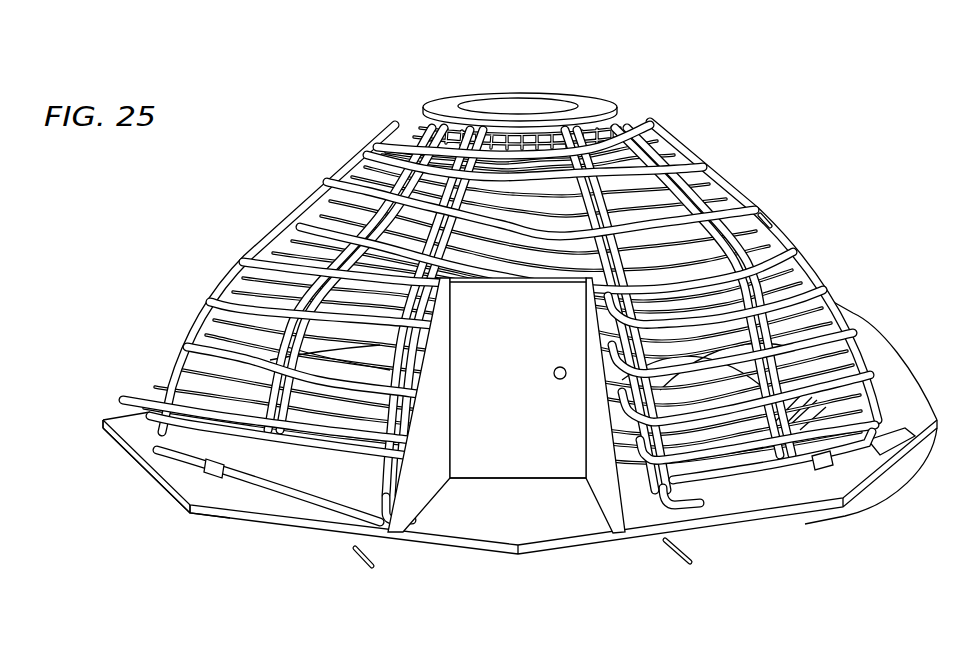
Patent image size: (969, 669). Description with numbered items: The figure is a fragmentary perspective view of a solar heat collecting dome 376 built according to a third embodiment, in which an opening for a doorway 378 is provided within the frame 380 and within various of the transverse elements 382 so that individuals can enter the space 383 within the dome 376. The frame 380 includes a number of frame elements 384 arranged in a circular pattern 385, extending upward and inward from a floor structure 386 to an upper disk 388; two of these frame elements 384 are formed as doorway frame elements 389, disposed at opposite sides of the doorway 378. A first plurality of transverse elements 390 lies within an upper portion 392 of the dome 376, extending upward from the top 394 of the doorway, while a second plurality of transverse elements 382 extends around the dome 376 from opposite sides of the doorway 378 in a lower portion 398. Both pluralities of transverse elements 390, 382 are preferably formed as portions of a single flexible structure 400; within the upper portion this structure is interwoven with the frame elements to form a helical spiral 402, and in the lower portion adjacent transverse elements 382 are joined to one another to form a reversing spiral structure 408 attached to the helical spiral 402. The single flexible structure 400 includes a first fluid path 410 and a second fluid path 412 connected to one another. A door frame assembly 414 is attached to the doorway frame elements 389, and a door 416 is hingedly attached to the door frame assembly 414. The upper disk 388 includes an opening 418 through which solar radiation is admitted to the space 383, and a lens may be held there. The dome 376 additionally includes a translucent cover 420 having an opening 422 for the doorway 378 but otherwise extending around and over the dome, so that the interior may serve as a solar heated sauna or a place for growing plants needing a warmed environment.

The solar heat collecting dome 376 is at (445, 270).
The doorway 378 is at (476, 512).
The frame 380 is at (663, 133).
The second plurality of transverse elements 382 is at (840, 306).
The space within the dome 383 is at (283, 462).
The frame elements 384 is at (397, 130).
The circular pattern 385 is at (98, 533).
The floor structure 386 is at (190, 513).
The upper disk 388 is at (518, 76).
The doorway frame elements 389 is at (345, 480).
The first plurality of transverse elements 390 is at (712, 180).
The upper portion 392 is at (737, 187).
The top of the doorway 394 is at (506, 447).
The lower portion 398 is at (856, 312).
The single flexible structure 400 is at (237, 257).
The helical spiral 402 is at (285, 221).
The reversing spiral structure 408 is at (212, 300).
The first fluid path 410 is at (108, 395).
The second fluid path 412 is at (97, 408).
The door frame assembly 414 is at (430, 480).
The door 416 is at (543, 473).
The opening 418 is at (527, 118).
The translucent cover 420 is at (710, 522).
The opening 422 is at (597, 493).